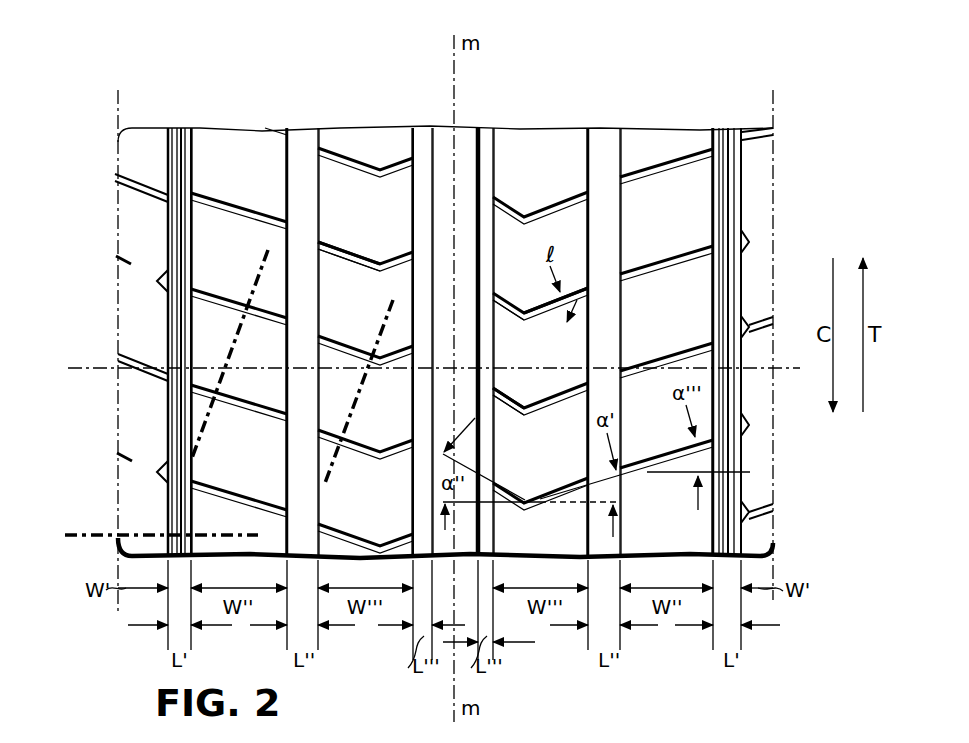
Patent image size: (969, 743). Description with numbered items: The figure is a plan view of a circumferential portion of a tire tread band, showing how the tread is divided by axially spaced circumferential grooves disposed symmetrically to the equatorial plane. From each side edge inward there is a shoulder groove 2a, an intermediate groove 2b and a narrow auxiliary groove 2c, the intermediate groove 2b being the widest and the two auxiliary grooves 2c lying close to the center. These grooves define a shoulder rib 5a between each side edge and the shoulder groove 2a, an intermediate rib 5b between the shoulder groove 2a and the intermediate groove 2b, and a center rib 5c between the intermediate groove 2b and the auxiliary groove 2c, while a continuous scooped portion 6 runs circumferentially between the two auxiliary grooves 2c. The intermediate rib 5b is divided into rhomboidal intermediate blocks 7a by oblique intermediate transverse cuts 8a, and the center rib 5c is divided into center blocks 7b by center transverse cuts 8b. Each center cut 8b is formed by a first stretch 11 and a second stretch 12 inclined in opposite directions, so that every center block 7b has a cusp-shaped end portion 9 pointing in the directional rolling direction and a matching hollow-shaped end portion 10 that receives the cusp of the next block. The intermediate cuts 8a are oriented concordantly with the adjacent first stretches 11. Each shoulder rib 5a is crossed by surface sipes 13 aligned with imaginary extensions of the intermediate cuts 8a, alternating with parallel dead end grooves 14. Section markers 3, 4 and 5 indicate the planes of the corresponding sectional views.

The shoulder rib 5a is at (141, 140).
The shoulder groove 2a is at (178, 140).
The intermediate rib 5b is at (232, 140).
The intermediate groove 2b is at (296, 140).
The center rib 5c is at (359, 140).
The auxiliary groove 2c is at (414, 140).
The continuous scooped portion 6 is at (466, 140).
The intermediate block 7a is at (254, 188).
The center block 7b is at (378, 218).
The intermediate transverse cut 8a is at (656, 278).
The center transverse cut 8b is at (524, 297).
The cusp-shaped end portion 9 is at (385, 262).
The hollow-shaped end portion 10 is at (378, 258).
The first stretch 11 is at (574, 300).
The second stretch 12 is at (506, 302).
The surface sipe 13 is at (133, 182).
The dead end groove 14 is at (128, 265).
The section line III-III 3 is at (388, 297).
The section line IV-IV 4 is at (265, 253).
The section line V-V 5 is at (66, 533).